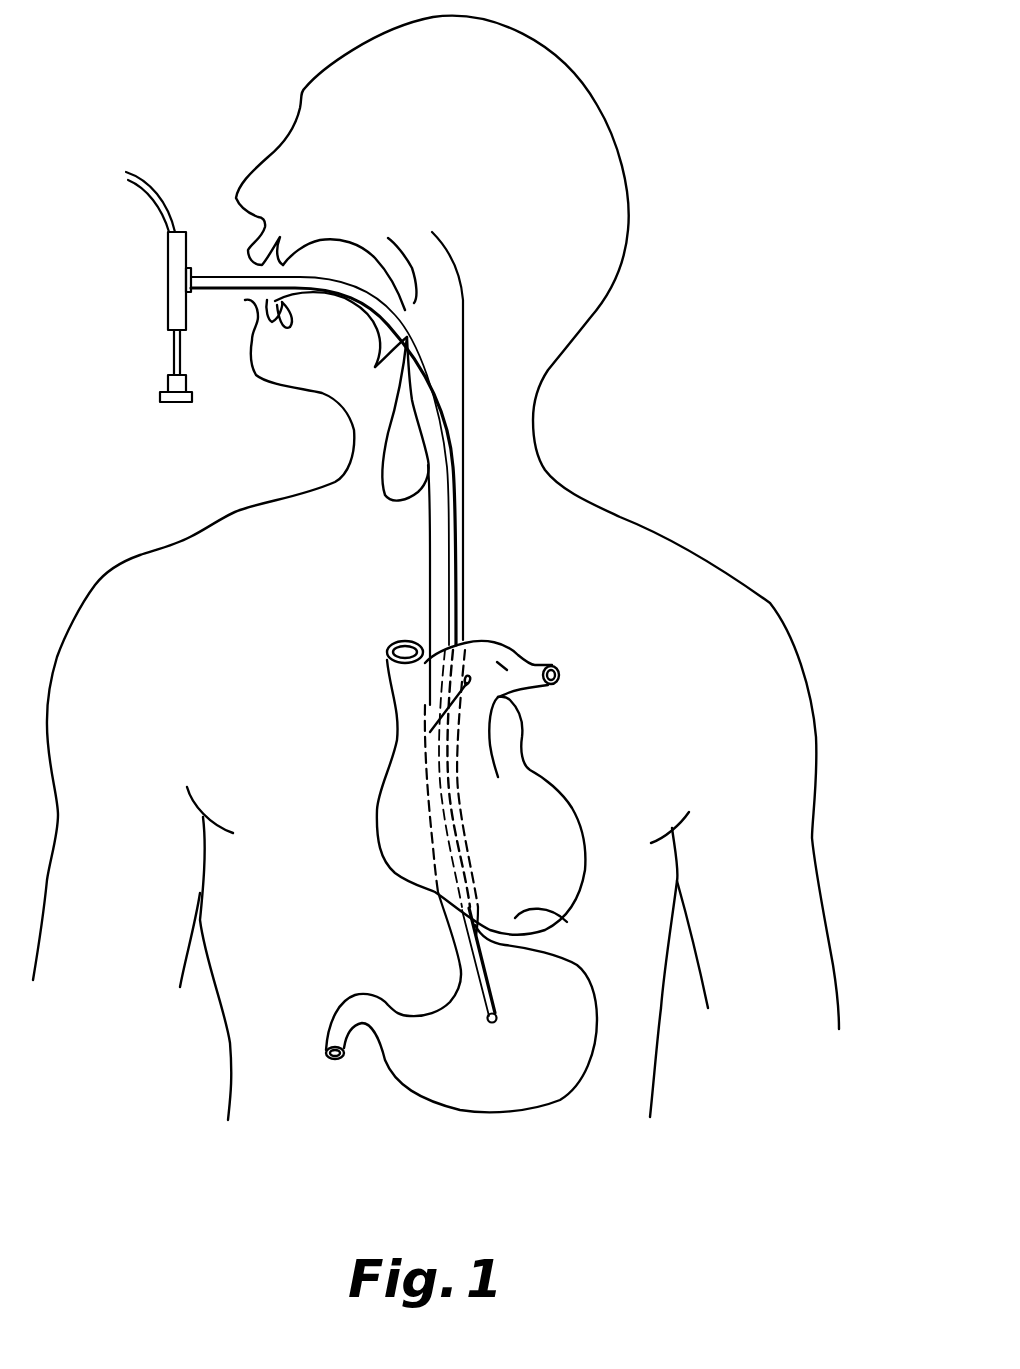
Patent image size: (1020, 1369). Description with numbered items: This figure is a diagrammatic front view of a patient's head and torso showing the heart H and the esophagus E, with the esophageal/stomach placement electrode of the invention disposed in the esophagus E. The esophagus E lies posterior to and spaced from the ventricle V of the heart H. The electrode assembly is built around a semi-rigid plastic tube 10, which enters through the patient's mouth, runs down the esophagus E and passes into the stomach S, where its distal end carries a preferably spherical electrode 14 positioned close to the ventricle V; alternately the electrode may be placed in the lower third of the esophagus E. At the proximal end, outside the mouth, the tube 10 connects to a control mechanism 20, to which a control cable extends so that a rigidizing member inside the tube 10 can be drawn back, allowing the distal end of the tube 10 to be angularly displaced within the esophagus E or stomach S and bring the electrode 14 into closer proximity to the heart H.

The tube 10 is at (462, 597).
The electrode 14 is at (494, 1024).
The control mechanism 20 is at (165, 289).
The esophagus E is at (467, 528).
The heart H is at (562, 799).
The ventricle V is at (570, 922).
The stomach S is at (598, 1008).